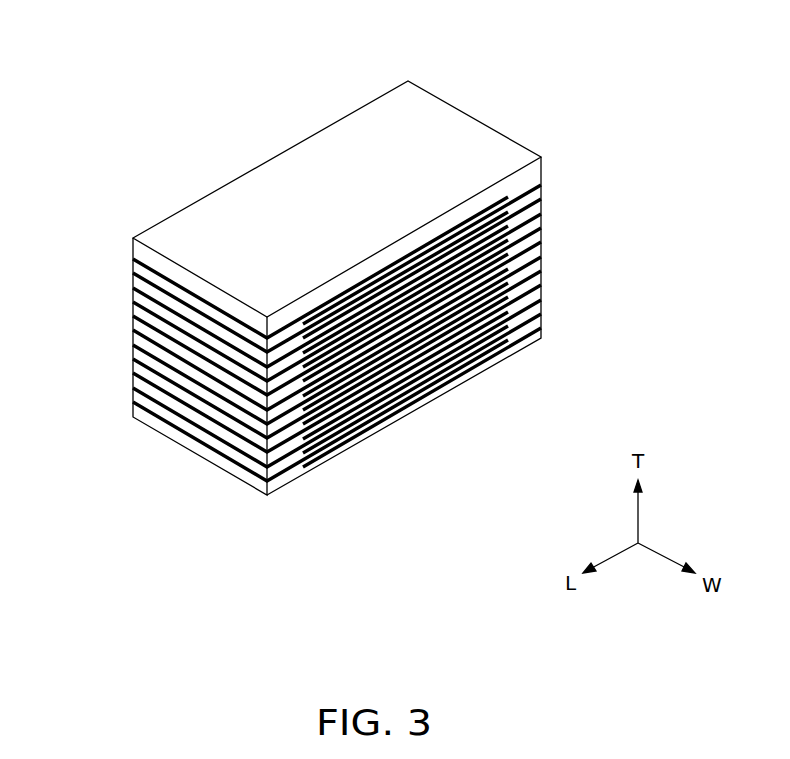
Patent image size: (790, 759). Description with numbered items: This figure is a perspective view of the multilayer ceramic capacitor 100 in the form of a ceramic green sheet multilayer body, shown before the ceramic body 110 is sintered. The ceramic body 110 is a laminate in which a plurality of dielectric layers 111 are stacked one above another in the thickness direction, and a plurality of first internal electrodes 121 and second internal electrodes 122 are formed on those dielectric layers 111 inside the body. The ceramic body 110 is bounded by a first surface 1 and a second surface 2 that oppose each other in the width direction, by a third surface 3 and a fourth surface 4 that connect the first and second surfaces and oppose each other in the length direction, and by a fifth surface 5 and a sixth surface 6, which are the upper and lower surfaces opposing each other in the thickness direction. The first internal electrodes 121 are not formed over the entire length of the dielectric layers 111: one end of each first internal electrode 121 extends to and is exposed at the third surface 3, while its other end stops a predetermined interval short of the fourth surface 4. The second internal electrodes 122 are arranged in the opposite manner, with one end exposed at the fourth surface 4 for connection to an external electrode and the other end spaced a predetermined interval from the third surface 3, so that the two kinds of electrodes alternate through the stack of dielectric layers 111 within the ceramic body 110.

The multilayer ceramic capacitor 100 is at (153, 26).
The ceramic body 110 is at (280, 182).
The first surface 1 is at (206, 230).
The second surface 2 is at (526, 264).
The third surface 3 is at (192, 406).
The fourth surface 4 is at (486, 152).
The fifth surface 5 is at (361, 140).
The sixth surface 6 is at (414, 410).
The dielectric layer 111 is at (133, 338).
The first internal electrode 121 is at (133, 300).
The second internal electrode 122 is at (523, 325).